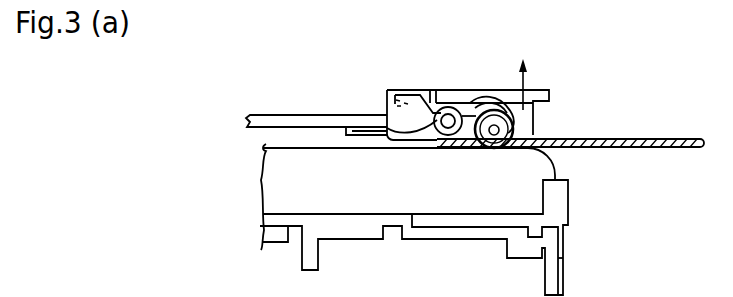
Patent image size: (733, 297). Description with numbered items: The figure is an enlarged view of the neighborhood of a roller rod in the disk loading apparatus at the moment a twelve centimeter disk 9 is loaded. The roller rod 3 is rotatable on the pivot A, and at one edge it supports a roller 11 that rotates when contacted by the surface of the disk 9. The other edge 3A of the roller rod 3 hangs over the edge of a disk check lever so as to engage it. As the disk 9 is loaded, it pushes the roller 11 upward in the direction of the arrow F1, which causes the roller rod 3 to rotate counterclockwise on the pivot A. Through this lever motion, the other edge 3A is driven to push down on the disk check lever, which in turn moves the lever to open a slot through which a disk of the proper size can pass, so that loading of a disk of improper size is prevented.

The pivot A is at (385, 117).
The roller rod 3 is at (461, 90).
The other edge of the roller rod 3A is at (403, 89).
The roller 11 is at (513, 142).
The arrow F1 is at (526, 73).
The disk 9 is at (673, 139).